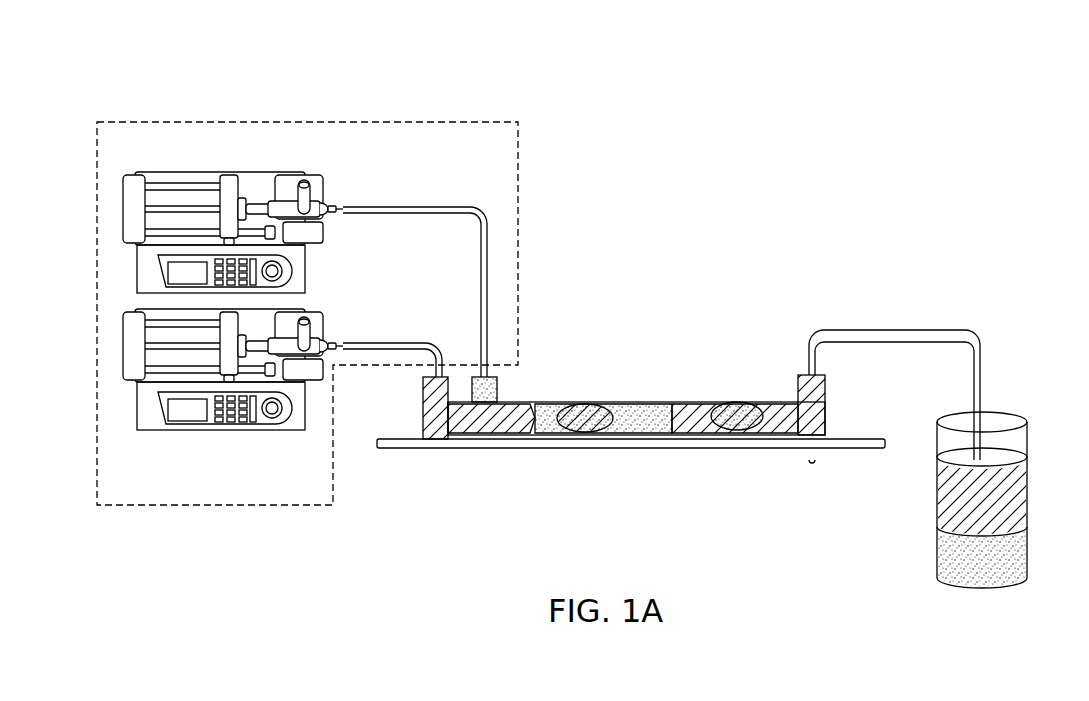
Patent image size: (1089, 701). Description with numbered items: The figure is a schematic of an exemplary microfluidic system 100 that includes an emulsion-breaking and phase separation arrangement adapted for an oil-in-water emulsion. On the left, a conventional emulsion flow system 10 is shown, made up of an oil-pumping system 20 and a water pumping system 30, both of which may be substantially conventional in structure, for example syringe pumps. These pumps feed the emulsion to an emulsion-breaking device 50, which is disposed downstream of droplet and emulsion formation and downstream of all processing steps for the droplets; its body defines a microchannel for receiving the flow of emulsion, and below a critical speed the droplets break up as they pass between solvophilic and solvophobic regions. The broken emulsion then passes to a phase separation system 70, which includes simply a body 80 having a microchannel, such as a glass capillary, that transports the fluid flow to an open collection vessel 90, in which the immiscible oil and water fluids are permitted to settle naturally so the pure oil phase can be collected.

The microfluidic system 100 is at (549, 83).
The emulsion flow system 10 is at (481, 173).
The oil-pumping system 20 is at (158, 172).
The water pumping system 30 is at (144, 390).
The emulsion-breaking device 50 is at (640, 382).
The phase separation system 70 is at (930, 415).
The body having a microchannel 80 is at (981, 378).
The open collection vessel 90 is at (1026, 558).